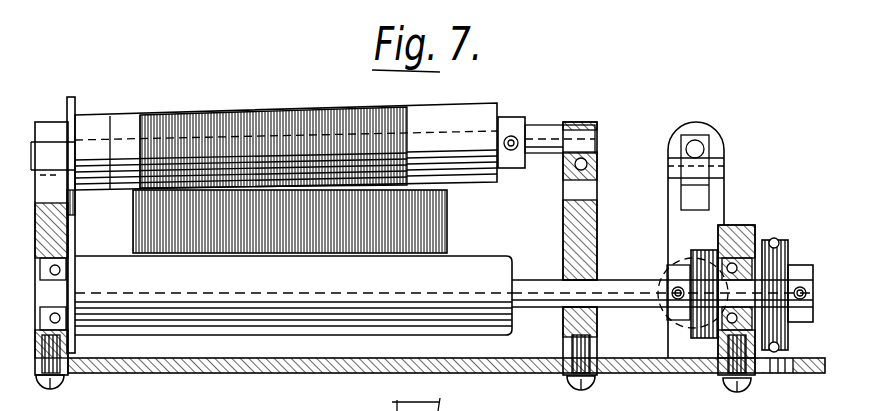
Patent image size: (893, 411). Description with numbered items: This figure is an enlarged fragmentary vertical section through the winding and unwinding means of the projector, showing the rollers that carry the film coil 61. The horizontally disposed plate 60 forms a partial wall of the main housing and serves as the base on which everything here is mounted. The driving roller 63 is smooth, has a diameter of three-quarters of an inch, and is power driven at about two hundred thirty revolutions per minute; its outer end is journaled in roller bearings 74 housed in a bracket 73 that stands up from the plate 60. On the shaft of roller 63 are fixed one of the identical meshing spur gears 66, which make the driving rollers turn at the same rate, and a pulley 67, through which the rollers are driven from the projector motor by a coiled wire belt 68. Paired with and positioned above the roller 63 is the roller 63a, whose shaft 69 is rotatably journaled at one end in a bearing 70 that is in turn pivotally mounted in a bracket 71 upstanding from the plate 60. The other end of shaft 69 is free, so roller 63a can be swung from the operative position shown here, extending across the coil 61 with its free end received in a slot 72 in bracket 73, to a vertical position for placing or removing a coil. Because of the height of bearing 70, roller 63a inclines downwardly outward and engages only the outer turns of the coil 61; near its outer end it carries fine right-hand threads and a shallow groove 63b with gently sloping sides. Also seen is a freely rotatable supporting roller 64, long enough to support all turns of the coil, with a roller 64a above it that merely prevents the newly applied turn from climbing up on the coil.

The plate 60 is at (537, 365).
The coil 61 is at (447, 225).
The driving roller 63 is at (392, 293).
The roller 63a is at (472, 113).
The shallow groove 63b is at (118, 122).
The supporting roller 64 is at (665, 310).
The roller 64a is at (718, 135).
The spur gear 66 is at (708, 336).
The pulley 67 is at (785, 252).
The coiled wire belt 68 is at (773, 238).
The shaft 69 is at (543, 130).
The bearing 70 is at (600, 158).
The bracket 71 is at (600, 222).
The slot 72 is at (45, 127).
The bracket 73 is at (40, 344).
The roller bearings 74 is at (68, 230).